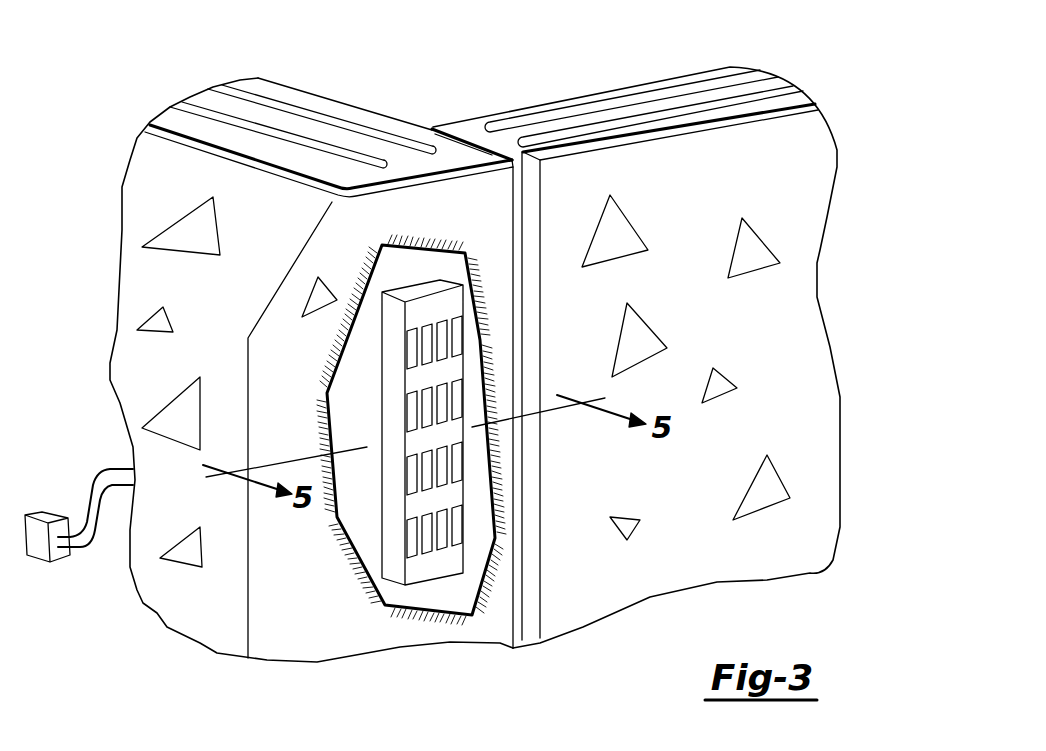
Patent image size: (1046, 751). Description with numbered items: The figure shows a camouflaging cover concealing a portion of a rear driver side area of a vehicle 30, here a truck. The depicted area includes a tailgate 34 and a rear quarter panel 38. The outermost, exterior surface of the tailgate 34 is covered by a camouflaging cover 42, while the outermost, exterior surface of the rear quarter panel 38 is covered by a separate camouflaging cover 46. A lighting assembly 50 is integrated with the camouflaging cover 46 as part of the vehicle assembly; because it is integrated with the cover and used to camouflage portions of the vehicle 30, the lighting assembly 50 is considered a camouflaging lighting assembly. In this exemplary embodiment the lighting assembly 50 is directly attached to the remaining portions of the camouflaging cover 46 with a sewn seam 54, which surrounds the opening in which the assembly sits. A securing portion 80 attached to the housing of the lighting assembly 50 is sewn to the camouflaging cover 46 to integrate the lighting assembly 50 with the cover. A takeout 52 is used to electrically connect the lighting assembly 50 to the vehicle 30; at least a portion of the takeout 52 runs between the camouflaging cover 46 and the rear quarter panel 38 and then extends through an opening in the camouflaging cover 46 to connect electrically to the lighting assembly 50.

The vehicle 30 is at (416, 106).
The tailgate 34 is at (463, 130).
The rear quarter panel 38 is at (298, 100).
The camouflaging cover 42 is at (812, 154).
The camouflaging cover 46 is at (228, 627).
The lighting assembly 50 is at (425, 578).
The takeout 52 is at (88, 472).
The sewn seam 54 is at (378, 614).
The securing portion 80 is at (476, 538).